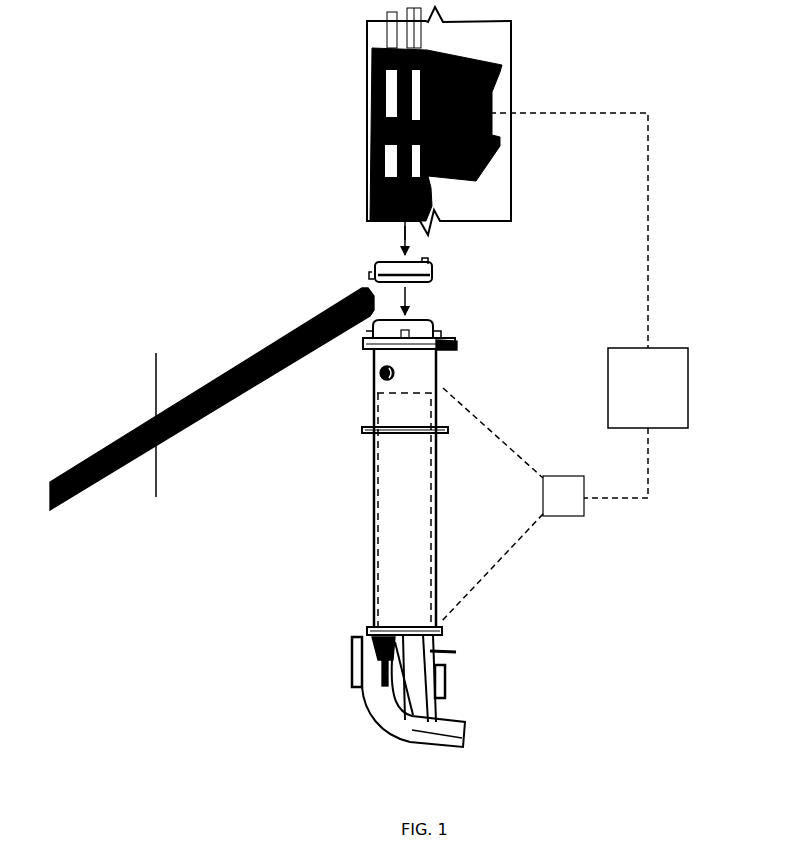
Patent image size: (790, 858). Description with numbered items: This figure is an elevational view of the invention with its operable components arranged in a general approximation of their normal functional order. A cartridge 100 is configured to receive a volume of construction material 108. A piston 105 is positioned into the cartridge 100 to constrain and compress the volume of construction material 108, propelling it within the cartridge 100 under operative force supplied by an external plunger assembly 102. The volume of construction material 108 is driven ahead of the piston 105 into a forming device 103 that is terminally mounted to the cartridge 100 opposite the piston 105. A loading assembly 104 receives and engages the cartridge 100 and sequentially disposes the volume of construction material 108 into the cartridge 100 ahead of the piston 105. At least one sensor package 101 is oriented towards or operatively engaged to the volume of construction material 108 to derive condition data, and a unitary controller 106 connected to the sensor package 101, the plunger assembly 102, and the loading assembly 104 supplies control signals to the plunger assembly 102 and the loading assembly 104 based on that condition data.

The cartridge 100 is at (364, 434).
The sensor package 101 is at (512, 505).
The plunger assembly 102 is at (333, 17).
The forming device 103 is at (487, 625).
The loading assembly 104 is at (313, 314).
The piston 105 is at (432, 280).
The unitary controller 106 is at (589, 305).
The volume of construction material 108 is at (392, 568).